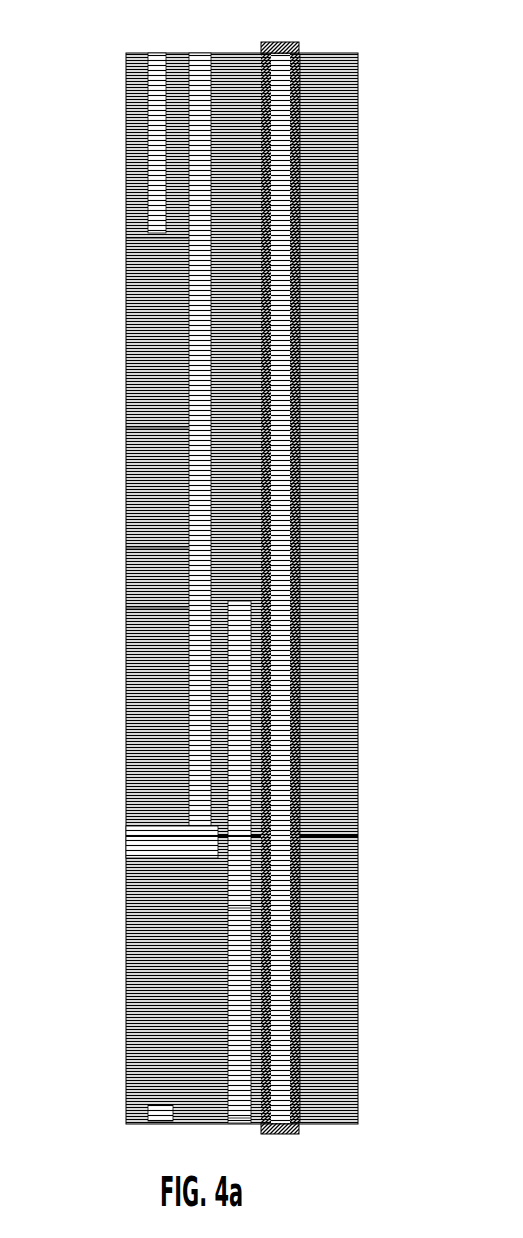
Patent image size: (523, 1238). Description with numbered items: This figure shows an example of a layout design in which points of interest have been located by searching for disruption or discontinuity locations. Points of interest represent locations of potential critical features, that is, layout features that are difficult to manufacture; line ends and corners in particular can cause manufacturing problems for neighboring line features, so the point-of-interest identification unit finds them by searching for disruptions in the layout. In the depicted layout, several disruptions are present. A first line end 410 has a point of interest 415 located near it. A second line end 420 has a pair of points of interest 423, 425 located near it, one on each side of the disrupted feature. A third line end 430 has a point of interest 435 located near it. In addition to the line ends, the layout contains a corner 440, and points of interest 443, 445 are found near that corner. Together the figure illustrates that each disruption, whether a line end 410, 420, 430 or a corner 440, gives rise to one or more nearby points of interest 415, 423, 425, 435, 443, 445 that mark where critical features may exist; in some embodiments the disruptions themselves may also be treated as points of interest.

The line end 410 is at (140, 215).
The point of interest 415 is at (157, 263).
The line end 420 is at (223, 598).
The point of interest 423 is at (132, 558).
The point of interest 425 is at (300, 563).
The line end 430 is at (133, 1087).
The point of interest 435 is at (217, 1067).
The corner 440 is at (180, 827).
The point of interest 443 is at (295, 890).
The point of interest 445 is at (305, 828).